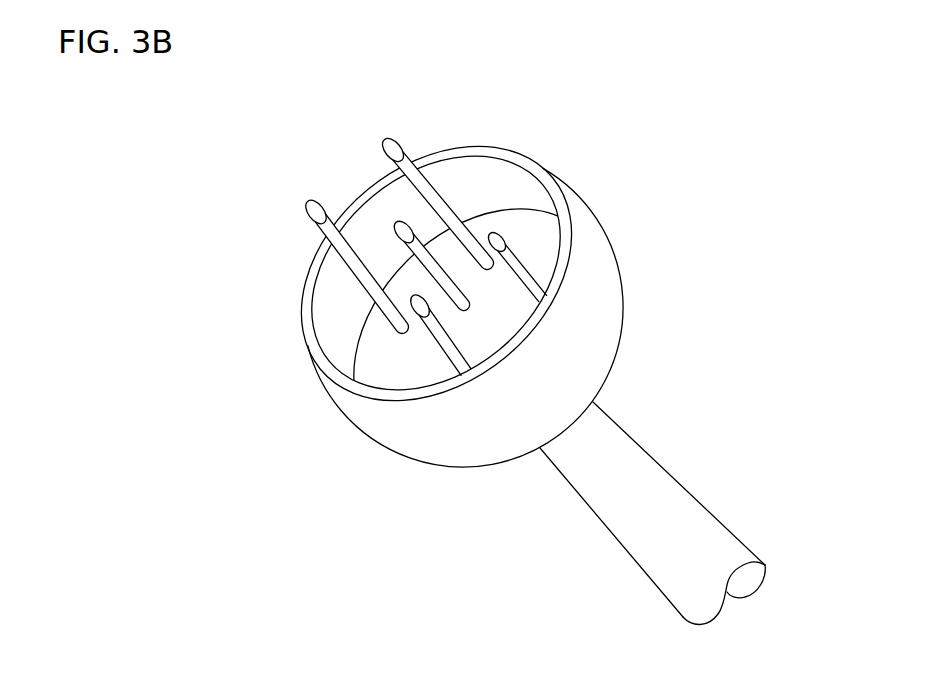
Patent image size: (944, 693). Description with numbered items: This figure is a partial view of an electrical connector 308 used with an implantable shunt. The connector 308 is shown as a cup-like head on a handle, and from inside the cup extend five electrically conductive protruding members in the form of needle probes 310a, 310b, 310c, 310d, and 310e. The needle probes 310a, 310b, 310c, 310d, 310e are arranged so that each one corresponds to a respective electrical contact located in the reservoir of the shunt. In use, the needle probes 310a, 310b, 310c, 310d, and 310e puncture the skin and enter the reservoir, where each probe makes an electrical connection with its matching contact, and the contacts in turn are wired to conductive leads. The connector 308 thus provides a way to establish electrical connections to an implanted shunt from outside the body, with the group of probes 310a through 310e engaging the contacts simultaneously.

The connector 308 is at (587, 300).
The electrically conductive needle probe 310a is at (393, 150).
The electrically conductive needle probe 310b is at (316, 212).
The electrically conductive needle probe 310c is at (404, 232).
The electrically conductive needle probe 310d is at (423, 307).
The electrically conductive needle probe 310e is at (497, 242).